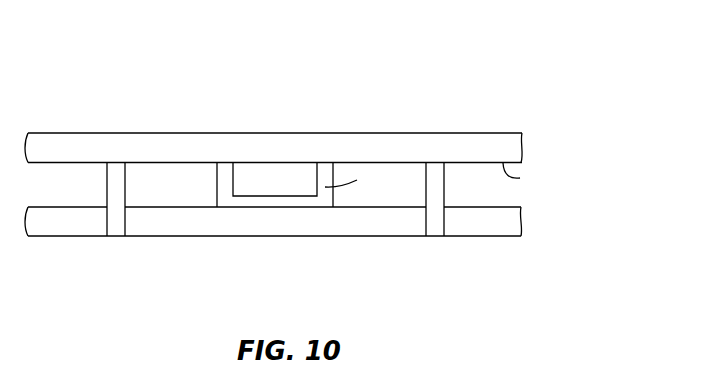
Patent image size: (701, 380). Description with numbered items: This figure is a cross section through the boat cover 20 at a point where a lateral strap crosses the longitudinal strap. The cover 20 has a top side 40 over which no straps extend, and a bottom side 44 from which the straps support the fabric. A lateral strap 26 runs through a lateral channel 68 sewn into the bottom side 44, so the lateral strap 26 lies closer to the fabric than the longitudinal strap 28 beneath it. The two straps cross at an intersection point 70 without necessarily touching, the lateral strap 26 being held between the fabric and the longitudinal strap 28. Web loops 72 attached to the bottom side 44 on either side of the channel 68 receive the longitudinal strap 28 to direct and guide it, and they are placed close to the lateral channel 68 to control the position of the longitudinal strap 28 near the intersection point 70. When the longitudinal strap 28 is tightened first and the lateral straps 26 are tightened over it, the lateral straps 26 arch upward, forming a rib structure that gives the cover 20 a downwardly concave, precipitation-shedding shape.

The boat cover 20 is at (456, 99).
The top side 40 is at (492, 132).
The bottom side 44 is at (526, 180).
The longitudinal strap 28 is at (373, 227).
The web loops 72 is at (117, 236).
The intersection points 70 is at (277, 227).
The lateral straps 26 is at (277, 175).
The lateral channels 68 is at (355, 188).